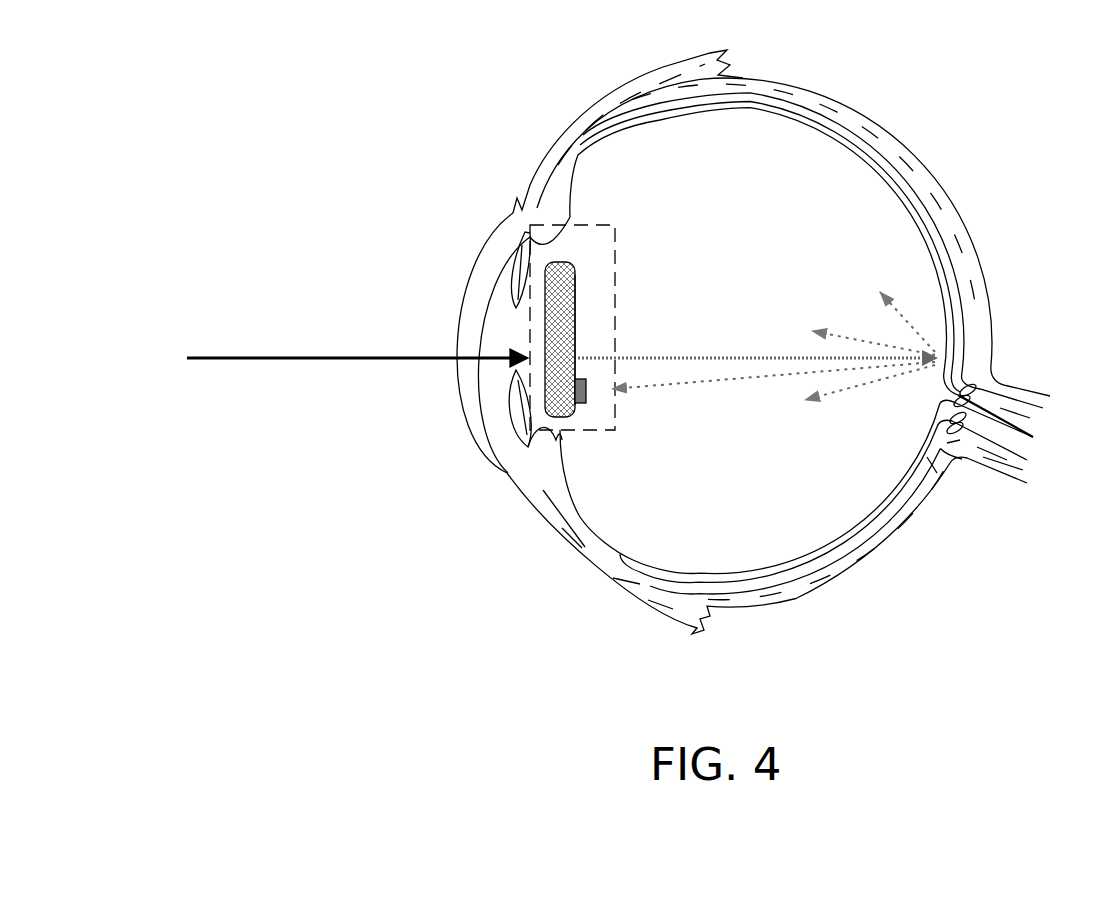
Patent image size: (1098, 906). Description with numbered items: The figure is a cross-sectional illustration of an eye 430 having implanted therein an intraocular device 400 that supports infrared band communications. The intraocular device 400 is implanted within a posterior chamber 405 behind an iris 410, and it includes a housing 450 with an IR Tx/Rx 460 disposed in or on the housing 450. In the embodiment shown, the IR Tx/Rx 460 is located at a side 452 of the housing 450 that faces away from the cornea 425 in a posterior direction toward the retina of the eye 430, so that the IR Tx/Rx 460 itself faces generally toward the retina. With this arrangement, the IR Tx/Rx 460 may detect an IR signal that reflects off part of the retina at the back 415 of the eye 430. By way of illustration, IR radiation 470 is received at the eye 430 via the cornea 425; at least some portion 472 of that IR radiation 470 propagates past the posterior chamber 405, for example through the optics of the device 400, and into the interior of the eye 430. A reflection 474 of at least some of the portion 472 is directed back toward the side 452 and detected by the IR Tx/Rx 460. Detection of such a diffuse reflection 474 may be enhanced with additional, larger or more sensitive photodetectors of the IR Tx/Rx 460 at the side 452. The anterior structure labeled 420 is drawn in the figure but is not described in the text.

The intraocular device 400 is at (602, 225).
The posterior chamber 405 is at (528, 305).
The iris 410 is at (517, 393).
The back of eye 415 is at (942, 300).
The anterior chamber 420 is at (490, 373).
The cornea 425 is at (458, 320).
The eye 430 is at (838, 483).
The housing 450 is at (562, 270).
The side of housing 452 is at (580, 322).
The IR Tx/Rx 460 is at (583, 405).
The IR radiation 470 is at (265, 358).
The portion of IR radiation 472 is at (752, 358).
The reflection 474 is at (765, 383).